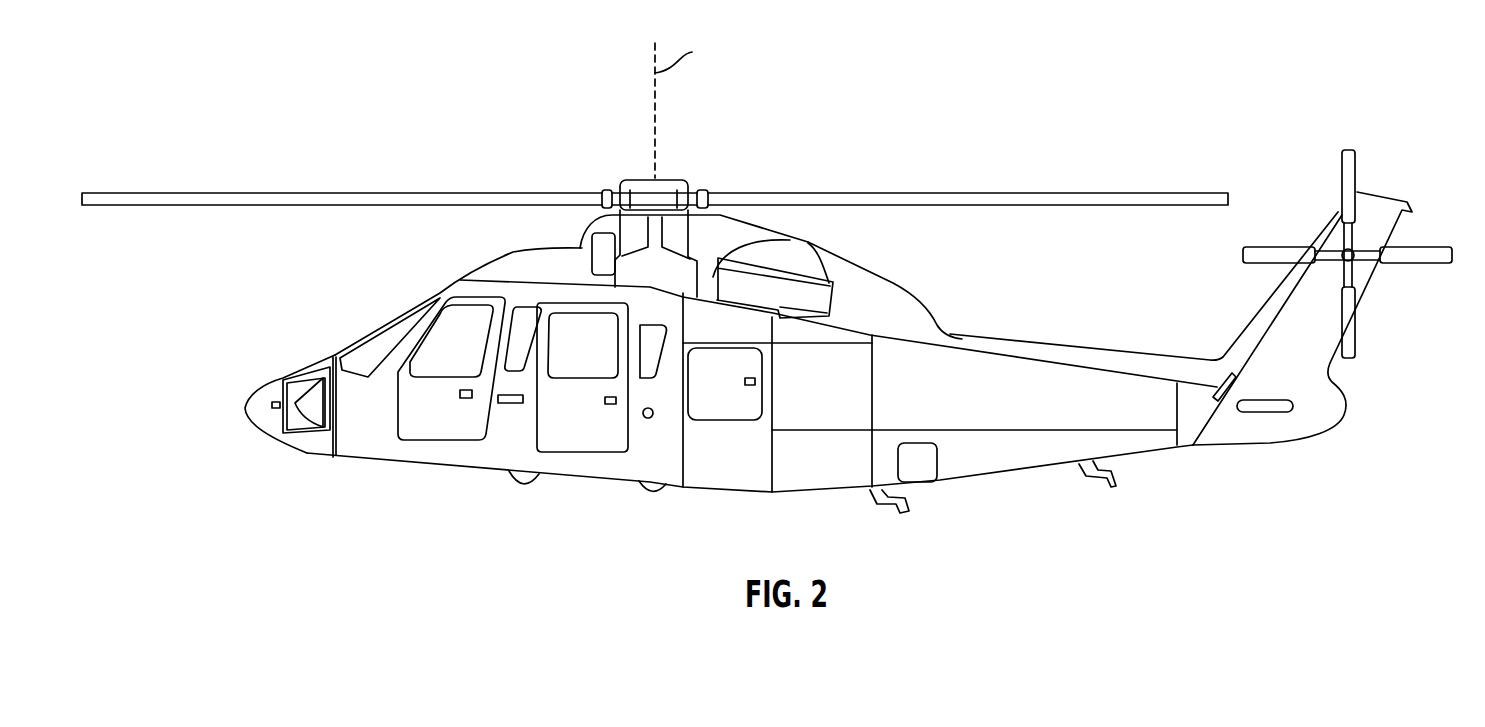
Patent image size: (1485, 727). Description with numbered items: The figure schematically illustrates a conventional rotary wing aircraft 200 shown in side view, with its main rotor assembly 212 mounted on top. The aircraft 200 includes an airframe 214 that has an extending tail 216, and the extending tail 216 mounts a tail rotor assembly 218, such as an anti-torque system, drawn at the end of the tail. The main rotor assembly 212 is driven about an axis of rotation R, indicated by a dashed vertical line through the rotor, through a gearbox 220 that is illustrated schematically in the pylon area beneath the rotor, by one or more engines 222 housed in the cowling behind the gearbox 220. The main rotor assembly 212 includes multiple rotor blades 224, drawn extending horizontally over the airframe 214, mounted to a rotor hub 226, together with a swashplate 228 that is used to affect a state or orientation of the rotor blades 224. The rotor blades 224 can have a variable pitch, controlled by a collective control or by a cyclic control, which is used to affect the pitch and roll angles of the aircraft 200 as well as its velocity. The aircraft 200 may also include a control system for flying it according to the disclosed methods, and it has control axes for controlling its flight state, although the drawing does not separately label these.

The rotary wing aircraft 200 is at (774, 46).
The main rotor assembly 212 is at (641, 174).
The airframe 214 is at (425, 463).
The extending tail 216 is at (1127, 458).
The tail rotor assembly 218 is at (1376, 169).
The gearbox 220 is at (630, 270).
The engine 222 is at (787, 290).
The rotor blades 224 is at (850, 193).
The rotor hub 226 is at (668, 178).
The swashplate 228 is at (682, 180).